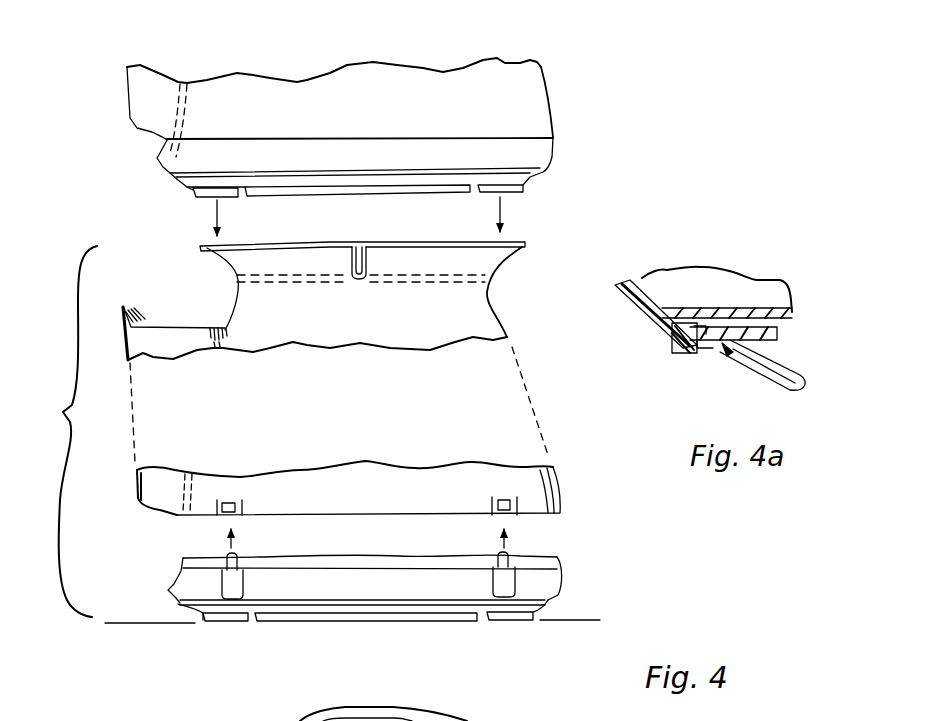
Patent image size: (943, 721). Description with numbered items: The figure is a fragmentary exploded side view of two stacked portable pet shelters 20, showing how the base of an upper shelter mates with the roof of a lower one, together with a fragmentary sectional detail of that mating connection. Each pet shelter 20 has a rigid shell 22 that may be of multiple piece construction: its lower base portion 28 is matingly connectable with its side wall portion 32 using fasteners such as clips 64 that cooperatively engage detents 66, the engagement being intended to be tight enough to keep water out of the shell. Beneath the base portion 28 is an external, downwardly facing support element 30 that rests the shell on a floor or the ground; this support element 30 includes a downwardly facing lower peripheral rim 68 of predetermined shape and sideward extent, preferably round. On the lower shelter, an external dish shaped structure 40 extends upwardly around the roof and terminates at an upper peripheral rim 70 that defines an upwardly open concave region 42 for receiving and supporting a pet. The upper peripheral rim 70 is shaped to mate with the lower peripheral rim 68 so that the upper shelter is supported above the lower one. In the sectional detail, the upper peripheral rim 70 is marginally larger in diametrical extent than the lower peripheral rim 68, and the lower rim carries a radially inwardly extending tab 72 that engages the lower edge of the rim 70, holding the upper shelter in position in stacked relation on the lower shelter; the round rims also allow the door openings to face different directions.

In FIG. 4, the pet shelter 20 is at (562, 100).
In FIG. 4A, the pet shelter 20 is at (777, 282).
In FIG. 4, the rigid shell 22 is at (158, 163).
In FIG. 4, the base portion 28 is at (556, 152).
In FIG. 4, the support element 30 is at (522, 194).
In FIG. 4A, the support element 30 is at (636, 310).
In FIG. 4, the side wall portion 32 is at (546, 70).
In FIG. 4, the dish shaped structure 40 is at (540, 250).
In FIG. 4A, the dish shaped structure 40 is at (765, 366).
In FIG. 4A, the upwardly open concave region 42 is at (795, 372).
In FIG. 4, the clip 64 is at (228, 560).
In FIG. 4, the detent 66 is at (233, 500).
In FIG. 4, the lower peripheral rim 68 is at (400, 195).
In FIG. 4A, the lower peripheral rim 68 is at (676, 356).
In FIG. 4, the upper peripheral rim 70 is at (433, 242).
In FIG. 4A, the upper peripheral rim 70 is at (701, 356).
In FIG. 4A, the tab 72 is at (700, 352).